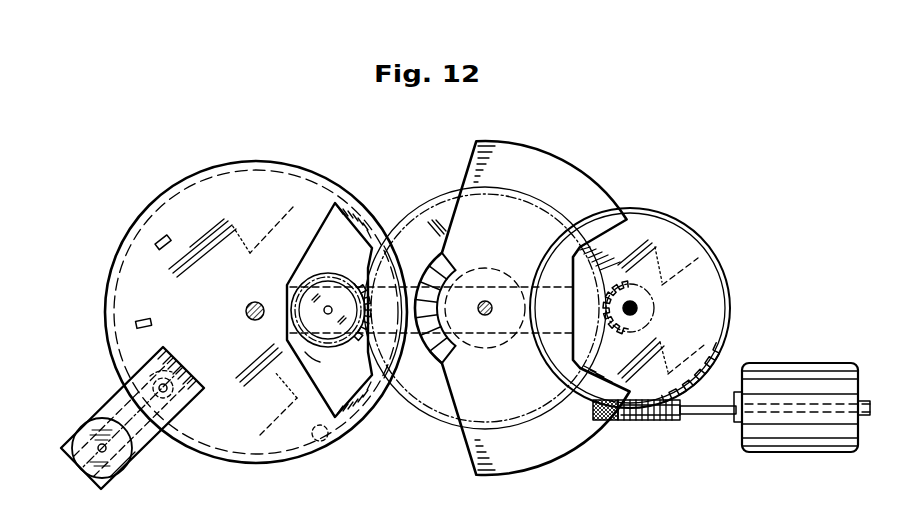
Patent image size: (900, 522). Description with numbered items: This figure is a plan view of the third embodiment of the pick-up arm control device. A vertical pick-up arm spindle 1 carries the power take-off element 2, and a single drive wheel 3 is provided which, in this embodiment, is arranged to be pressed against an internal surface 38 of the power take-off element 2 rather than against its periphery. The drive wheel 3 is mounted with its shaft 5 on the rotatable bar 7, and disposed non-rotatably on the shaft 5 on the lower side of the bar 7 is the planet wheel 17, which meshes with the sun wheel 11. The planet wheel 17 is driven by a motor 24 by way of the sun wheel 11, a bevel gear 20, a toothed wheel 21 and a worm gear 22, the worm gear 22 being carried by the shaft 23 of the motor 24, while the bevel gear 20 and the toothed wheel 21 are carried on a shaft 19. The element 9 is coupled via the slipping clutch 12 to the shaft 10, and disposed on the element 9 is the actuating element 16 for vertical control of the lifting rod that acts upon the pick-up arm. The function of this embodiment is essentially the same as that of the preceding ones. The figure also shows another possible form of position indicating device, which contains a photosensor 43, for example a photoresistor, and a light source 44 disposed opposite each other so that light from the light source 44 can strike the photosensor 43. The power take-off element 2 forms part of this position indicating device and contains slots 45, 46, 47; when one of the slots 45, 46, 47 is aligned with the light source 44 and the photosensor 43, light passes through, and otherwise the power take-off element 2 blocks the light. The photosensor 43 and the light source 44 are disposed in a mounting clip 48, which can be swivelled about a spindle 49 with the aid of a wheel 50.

The pick-up arm spindle 1 is at (249, 306).
The power take-off element 2 is at (277, 165).
The drive wheel 3 is at (322, 272).
The shaft 5 is at (332, 304).
The rotatable bar 7 is at (437, 360).
The element 9 is at (553, 160).
The shaft 10 is at (492, 302).
The sun wheel 11 is at (422, 419).
The slipping clutch 12 is at (466, 266).
The actuating element 16 is at (429, 270).
The planet wheel 17 is at (321, 356).
The shaft 19 is at (640, 309).
The bevel gear 20 is at (653, 284).
The toothed wheel 21 is at (730, 286).
The worm gear 22 is at (650, 424).
The shaft 23 is at (705, 416).
The motor 24 is at (792, 453).
The internal surface 38 is at (324, 441).
The photosensor 43 is at (198, 388).
The light source 44 is at (158, 382).
The slot 45 is at (175, 370).
The slot 46 is at (150, 320).
The slot 47 is at (168, 240).
The mounting clip 48 is at (150, 448).
The spindle 49 is at (106, 452).
The wheel 50 is at (85, 443).